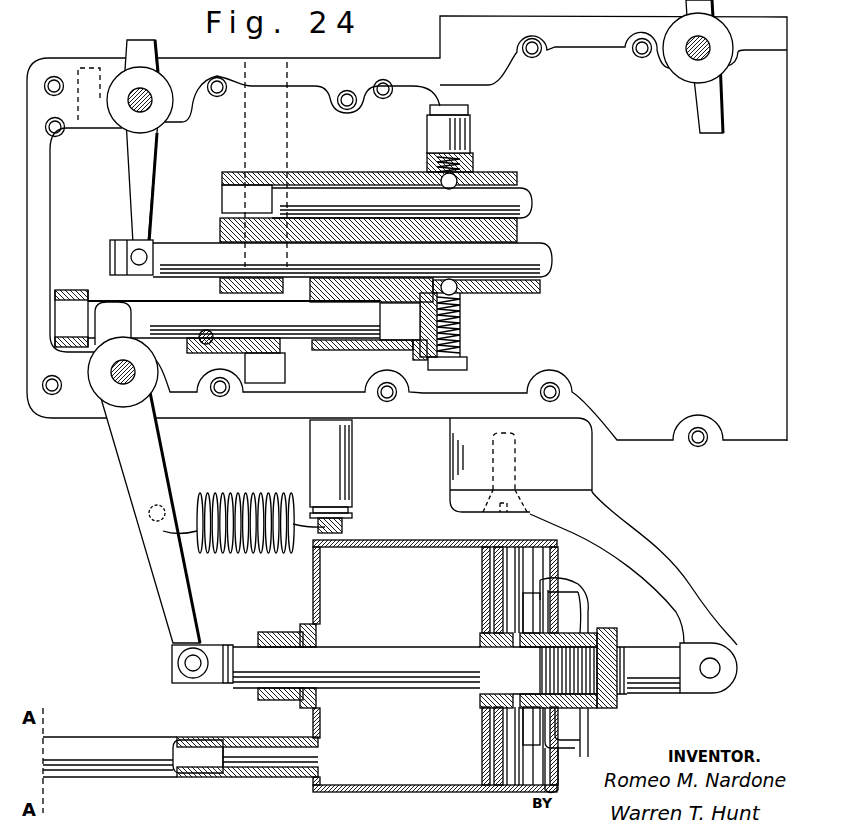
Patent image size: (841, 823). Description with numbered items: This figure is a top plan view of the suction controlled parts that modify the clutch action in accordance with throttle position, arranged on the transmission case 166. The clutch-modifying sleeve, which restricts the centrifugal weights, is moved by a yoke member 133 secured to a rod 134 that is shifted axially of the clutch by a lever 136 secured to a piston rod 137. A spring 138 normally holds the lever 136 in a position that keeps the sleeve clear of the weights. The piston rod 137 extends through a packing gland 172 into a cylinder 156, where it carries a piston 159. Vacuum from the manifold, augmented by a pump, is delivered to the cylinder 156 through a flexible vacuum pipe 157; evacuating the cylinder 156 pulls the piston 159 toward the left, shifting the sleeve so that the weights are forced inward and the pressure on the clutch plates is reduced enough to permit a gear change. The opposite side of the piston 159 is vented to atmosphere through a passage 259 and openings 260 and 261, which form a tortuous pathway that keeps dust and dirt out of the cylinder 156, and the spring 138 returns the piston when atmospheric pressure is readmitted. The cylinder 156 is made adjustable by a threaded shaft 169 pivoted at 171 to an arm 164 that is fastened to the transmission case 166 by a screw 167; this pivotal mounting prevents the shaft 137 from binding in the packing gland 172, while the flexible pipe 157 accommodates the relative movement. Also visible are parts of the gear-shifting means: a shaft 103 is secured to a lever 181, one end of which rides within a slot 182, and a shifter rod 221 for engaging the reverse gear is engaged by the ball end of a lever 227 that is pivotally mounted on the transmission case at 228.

The lever 181 is at (145, 175).
The slot 182 is at (136, 270).
The shifter rod 221 is at (406, 203).
The shaft 103 is at (398, 260).
The rod 134 is at (190, 319).
The yoke member 133 is at (280, 370).
The transmission case 166 is at (413, 408).
The screw 167 is at (515, 463).
The lever 136 is at (140, 475).
The spring 138 is at (241, 483).
The piston rod 137 is at (243, 650).
The packing gland 172 is at (280, 631).
The cylinder 156 is at (423, 743).
The vacuum pipe 157 is at (115, 742).
The piston 159 is at (490, 758).
The arm 164 is at (686, 572).
The threaded shaft 169 is at (660, 652).
The pivot 171 is at (720, 667).
The opening 260 is at (585, 606).
The opening 261 is at (546, 669).
The passage 259 is at (556, 756).
The lever 227 is at (705, 122).
The pivot 228 is at (712, 45).